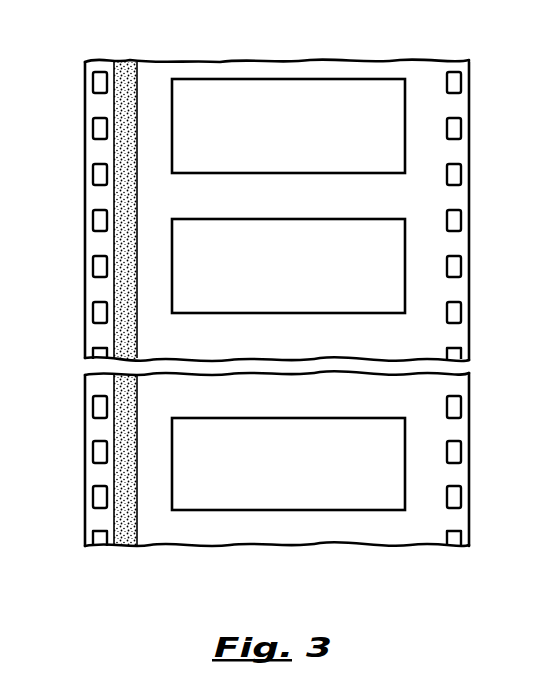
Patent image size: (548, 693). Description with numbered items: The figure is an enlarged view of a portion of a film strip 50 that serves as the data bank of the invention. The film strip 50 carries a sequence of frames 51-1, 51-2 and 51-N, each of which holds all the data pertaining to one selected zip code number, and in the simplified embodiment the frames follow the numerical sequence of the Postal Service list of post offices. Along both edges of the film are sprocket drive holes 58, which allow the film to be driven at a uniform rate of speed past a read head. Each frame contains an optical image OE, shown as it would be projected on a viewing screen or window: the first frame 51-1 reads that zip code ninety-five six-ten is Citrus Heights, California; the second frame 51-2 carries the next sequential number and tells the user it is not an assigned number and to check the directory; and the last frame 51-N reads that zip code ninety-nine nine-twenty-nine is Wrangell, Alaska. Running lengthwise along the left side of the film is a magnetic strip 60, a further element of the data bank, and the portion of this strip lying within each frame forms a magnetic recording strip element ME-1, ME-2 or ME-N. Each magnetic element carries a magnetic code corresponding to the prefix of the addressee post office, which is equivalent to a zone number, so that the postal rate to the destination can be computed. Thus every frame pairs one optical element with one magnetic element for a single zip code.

The film strip 50 is at (470, 196).
The sprocket drive holes 58 is at (93, 125).
The magnetic strip 60 is at (127, 63).
The frame 51-1 is at (398, 113).
The frame 51-2 is at (400, 252).
The frame 51-N is at (398, 440).
The optical image OE is at (302, 88).
The magnetic recording strip element ME-1 is at (122, 135).
The magnetic recording strip element ME-2 is at (124, 268).
The magnetic recording strip element ME-N is at (124, 462).